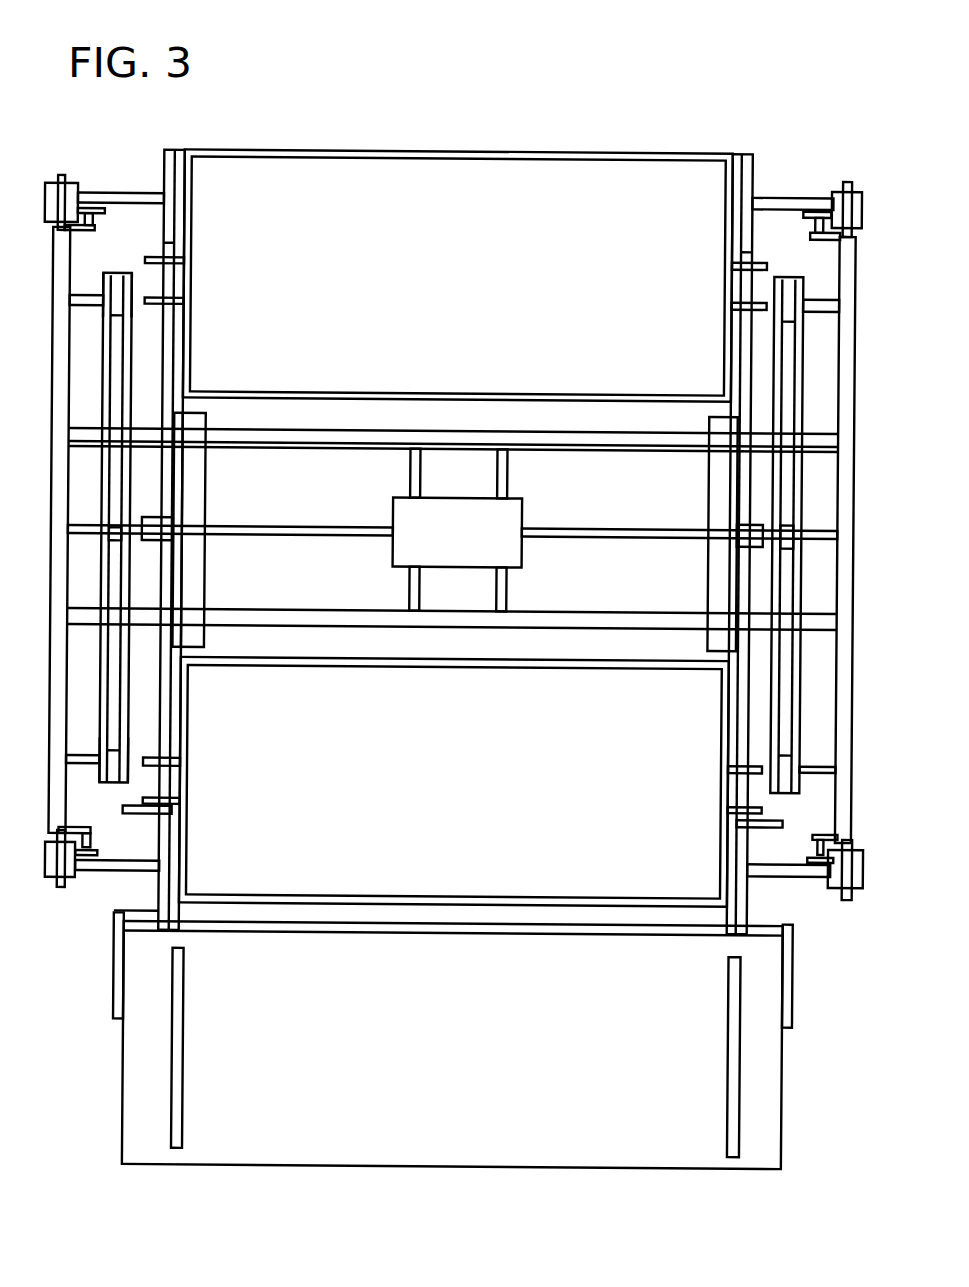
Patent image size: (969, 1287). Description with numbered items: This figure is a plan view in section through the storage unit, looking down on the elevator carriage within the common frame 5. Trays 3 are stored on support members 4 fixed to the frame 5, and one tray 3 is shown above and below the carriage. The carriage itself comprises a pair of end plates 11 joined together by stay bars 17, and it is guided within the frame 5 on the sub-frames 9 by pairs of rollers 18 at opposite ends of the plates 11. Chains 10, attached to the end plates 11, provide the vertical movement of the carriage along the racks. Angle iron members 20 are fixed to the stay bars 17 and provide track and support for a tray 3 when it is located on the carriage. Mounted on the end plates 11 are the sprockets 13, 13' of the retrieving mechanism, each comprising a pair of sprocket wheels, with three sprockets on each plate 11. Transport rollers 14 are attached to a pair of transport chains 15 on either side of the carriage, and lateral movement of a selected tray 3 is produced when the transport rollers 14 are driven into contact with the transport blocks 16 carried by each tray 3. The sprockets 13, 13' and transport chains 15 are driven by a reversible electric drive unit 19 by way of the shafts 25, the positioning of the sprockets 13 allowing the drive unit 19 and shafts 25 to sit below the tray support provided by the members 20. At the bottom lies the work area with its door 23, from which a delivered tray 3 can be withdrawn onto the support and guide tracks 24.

The tray 3 is at (456, 527).
The support member 4 is at (182, 719).
The frame 5 is at (165, 181).
The sub-frame 9 is at (71, 881).
The chain 10 is at (60, 178).
The end plate 11 is at (49, 725).
The sprocket 13 is at (99, 527).
The sprocket 13' is at (111, 526).
The transport roller 14 is at (151, 543).
The transport chain 15 is at (800, 274).
The transport block 16 is at (178, 262).
The stay bar 17 is at (659, 618).
The roller 18 is at (96, 856).
The reversible electric drive unit 19 is at (457, 530).
The angle iron member 20 is at (193, 584).
The door 23 is at (452, 1040).
The support and guide track 24 is at (186, 1115).
The shaft 25 is at (247, 530).